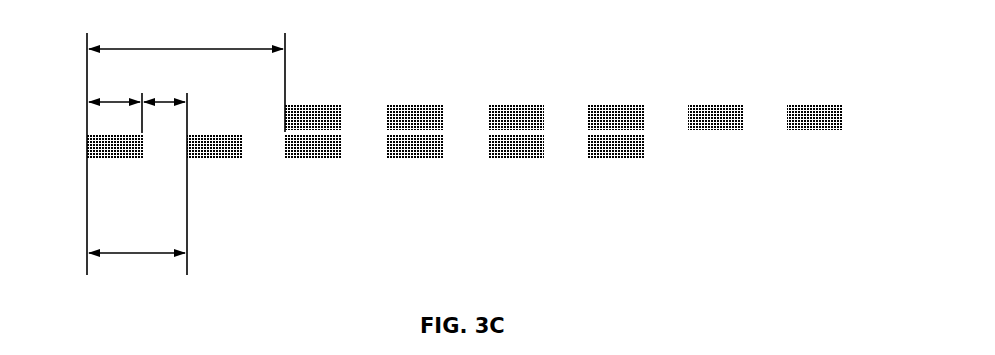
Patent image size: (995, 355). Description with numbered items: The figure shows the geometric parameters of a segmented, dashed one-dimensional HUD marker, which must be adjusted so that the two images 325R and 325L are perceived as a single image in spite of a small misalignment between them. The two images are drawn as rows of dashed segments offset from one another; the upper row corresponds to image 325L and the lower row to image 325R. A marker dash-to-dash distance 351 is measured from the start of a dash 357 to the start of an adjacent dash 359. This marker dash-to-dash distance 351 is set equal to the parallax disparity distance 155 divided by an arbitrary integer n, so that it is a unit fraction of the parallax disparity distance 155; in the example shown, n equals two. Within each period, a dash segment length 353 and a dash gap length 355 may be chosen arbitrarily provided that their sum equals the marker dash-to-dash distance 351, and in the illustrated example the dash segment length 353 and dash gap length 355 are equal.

The parallax disparity distance 155 is at (182, 49).
The dash segment length 353 is at (110, 101).
The dash gap length 355 is at (167, 100).
The marker dash-to-dash distance 351 is at (138, 254).
The dash 357 is at (115, 148).
The adjacent dash 359 is at (212, 148).
The left image 325L is at (713, 113).
The right image 325R is at (636, 143).